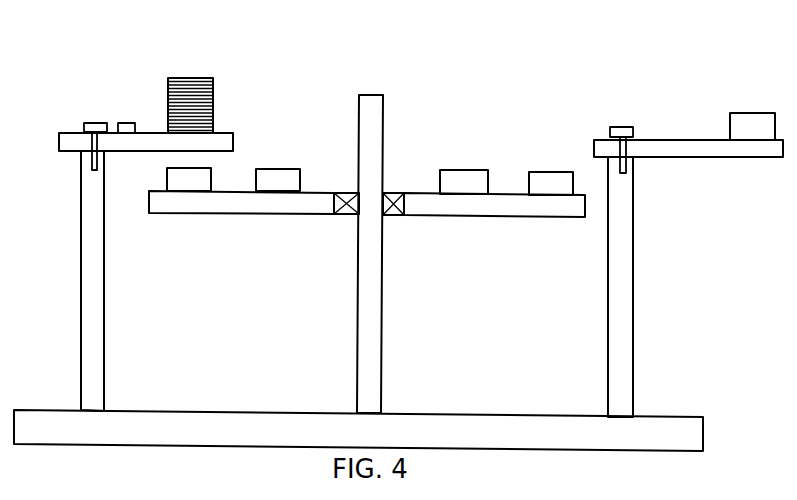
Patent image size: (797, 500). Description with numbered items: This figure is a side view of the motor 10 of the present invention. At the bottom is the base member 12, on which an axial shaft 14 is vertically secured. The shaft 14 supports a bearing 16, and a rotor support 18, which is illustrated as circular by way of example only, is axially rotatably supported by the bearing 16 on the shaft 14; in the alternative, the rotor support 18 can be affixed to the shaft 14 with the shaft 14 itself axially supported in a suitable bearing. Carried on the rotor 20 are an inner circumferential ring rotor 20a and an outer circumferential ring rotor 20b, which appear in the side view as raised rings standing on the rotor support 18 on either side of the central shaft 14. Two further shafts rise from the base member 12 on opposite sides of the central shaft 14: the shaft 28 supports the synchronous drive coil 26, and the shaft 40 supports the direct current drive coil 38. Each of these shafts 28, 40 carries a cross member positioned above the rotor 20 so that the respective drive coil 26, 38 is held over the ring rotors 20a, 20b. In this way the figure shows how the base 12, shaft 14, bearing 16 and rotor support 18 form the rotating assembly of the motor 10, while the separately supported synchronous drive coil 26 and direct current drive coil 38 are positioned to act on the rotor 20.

The motor 10 is at (629, 66).
The base member 12 is at (704, 437).
The axial shaft 14 is at (384, 164).
The bearing 16 is at (392, 216).
The rotor support 18 is at (587, 207).
The rotor 20 is at (371, 200).
The inner circumferential ring rotor 20a is at (502, 177).
The outer circumferential ring rotor 20b is at (590, 176).
The synchronous drive coil 26 is at (752, 113).
The shaft 28 is at (634, 281).
The direct current drive coil 38 is at (213, 121).
The shaft 40 is at (81, 263).